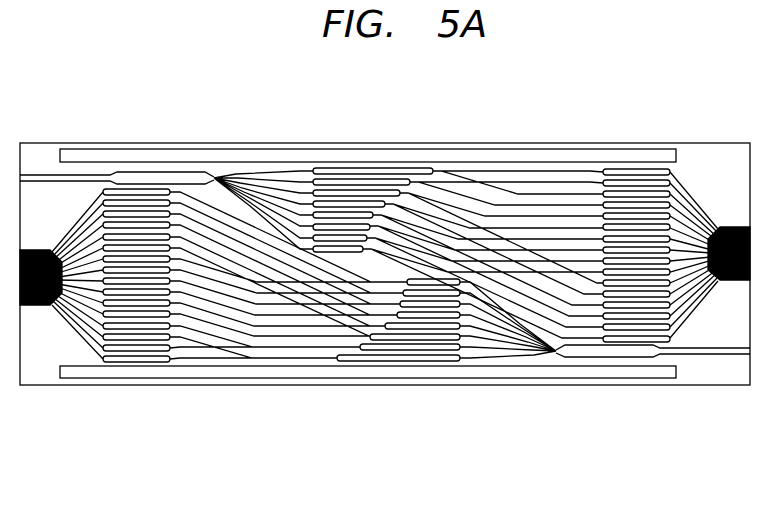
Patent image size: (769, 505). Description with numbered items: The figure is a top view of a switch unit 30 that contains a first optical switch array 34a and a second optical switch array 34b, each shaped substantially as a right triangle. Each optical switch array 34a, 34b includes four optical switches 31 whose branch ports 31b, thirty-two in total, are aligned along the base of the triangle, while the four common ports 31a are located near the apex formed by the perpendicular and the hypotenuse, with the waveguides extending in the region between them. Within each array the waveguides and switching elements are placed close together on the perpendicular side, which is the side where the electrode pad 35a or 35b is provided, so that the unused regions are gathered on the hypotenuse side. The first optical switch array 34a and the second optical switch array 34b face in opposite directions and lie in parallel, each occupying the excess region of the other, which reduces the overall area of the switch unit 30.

The switch unit 30 is at (706, 372).
The optical switch 31 is at (181, 169).
The common port 31a is at (134, 164).
The branch port 31b is at (641, 165).
The first optical switch array 34a is at (610, 447).
The second optical switch array 34b is at (280, 88).
The electrode pad 35a is at (247, 379).
The electrode pad 35b is at (565, 150).